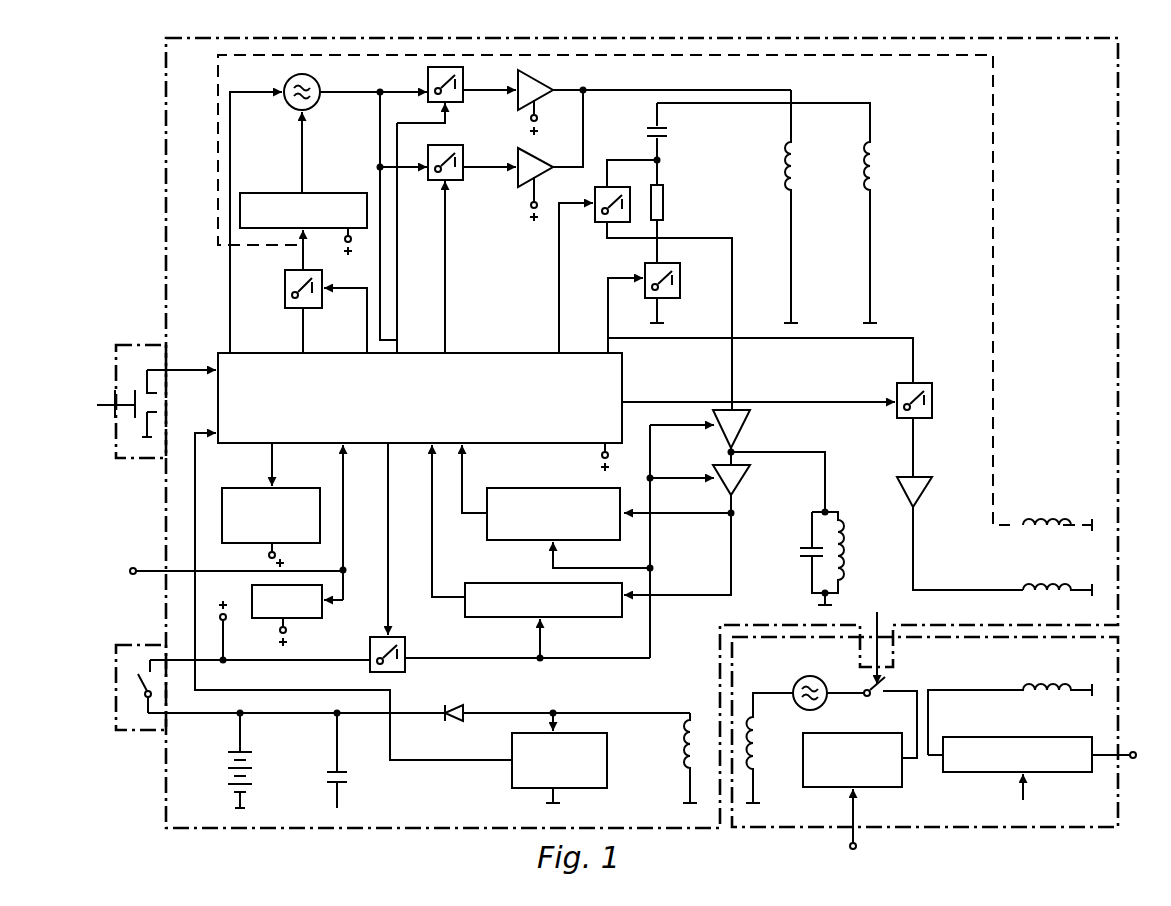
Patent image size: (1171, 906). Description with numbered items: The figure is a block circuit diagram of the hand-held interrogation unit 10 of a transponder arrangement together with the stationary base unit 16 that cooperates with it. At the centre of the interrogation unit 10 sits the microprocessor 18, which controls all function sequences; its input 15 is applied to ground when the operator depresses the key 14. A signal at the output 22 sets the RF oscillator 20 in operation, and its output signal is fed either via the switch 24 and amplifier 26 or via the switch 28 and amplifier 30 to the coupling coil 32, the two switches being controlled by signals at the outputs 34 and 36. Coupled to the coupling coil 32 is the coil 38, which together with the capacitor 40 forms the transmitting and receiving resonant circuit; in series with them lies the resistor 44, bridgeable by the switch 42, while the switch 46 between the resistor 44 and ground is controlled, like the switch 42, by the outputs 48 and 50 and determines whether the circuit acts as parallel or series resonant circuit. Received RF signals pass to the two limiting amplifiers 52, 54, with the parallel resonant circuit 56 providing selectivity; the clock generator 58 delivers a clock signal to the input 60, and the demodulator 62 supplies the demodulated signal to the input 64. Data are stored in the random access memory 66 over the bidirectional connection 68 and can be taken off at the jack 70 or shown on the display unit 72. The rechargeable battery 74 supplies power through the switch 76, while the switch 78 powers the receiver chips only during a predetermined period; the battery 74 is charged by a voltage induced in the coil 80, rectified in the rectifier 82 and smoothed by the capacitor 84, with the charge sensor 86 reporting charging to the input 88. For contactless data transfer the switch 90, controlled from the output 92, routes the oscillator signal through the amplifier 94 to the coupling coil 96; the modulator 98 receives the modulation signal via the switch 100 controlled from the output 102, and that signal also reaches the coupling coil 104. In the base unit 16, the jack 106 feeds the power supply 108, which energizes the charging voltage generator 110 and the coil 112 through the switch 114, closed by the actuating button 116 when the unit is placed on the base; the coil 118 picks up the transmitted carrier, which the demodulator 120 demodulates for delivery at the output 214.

The interrogation unit 10 is at (1118, 240).
The key 14 is at (100, 402).
The input of the microprocessor 15 is at (212, 350).
The base unit 16 is at (1118, 684).
The microprocessor 18 is at (220, 352).
The RF oscillator 20 is at (310, 104).
The output of the microprocessor 22 is at (233, 352).
The switch 24 is at (460, 101).
The amplifier 26 is at (555, 84).
The switch 28 is at (462, 180).
The amplifier 30 is at (546, 140).
The coupling coil 32 is at (793, 160).
The output of the microprocessor 34 is at (398, 352).
The output of the microprocessor 36 is at (448, 352).
The coil 38 is at (872, 160).
The capacitor 40 is at (648, 130).
The switch 42 is at (598, 222).
The resistor 44 is at (663, 203).
The switch 46 is at (675, 298).
The output of the microprocessor 48 is at (557, 352).
The output of the microprocessor 50 is at (606, 352).
The amplifier 52 is at (745, 440).
The amplifier 54 is at (744, 496).
The parallel resonant circuit 56 is at (836, 520).
The clock generator 58 is at (533, 488).
The input of the microprocessor 60 is at (462, 496).
The demodulator 62 is at (486, 583).
The input of the microprocessor 64 is at (432, 575).
The random access memory 66 is at (306, 618).
The bidirectional connection 68 is at (343, 490).
The jack 70 is at (133, 568).
The display unit 72 is at (255, 488).
The rechargeable battery 74 is at (252, 788).
The switch 76 is at (165, 614).
The switch 78 is at (406, 656).
The coil 80 is at (689, 765).
The rectifier 82 is at (458, 710).
The capacitor 84 is at (348, 780).
The charge sensor 86 is at (512, 770).
The input of the microprocessor 88 is at (215, 430).
The switch 90 is at (897, 410).
The output of the microprocessor 92 is at (700, 402).
The amplifier 94 is at (915, 480).
The coupling coil 96 is at (1050, 588).
The modulator 98 is at (290, 192).
The switch 100 is at (285, 290).
The output of the microprocessor 102 is at (366, 352).
The coupling coil 104 is at (1040, 523).
The jack 106 is at (856, 846).
The power supply 108 is at (894, 787).
The charging voltage generator 110 is at (795, 688).
The coil 112 is at (756, 794).
The switch 114 is at (866, 700).
The actuating button 116 is at (875, 615).
The coil 118 is at (1045, 688).
The demodulator 120 is at (1030, 774).
The output 214 is at (1134, 752).